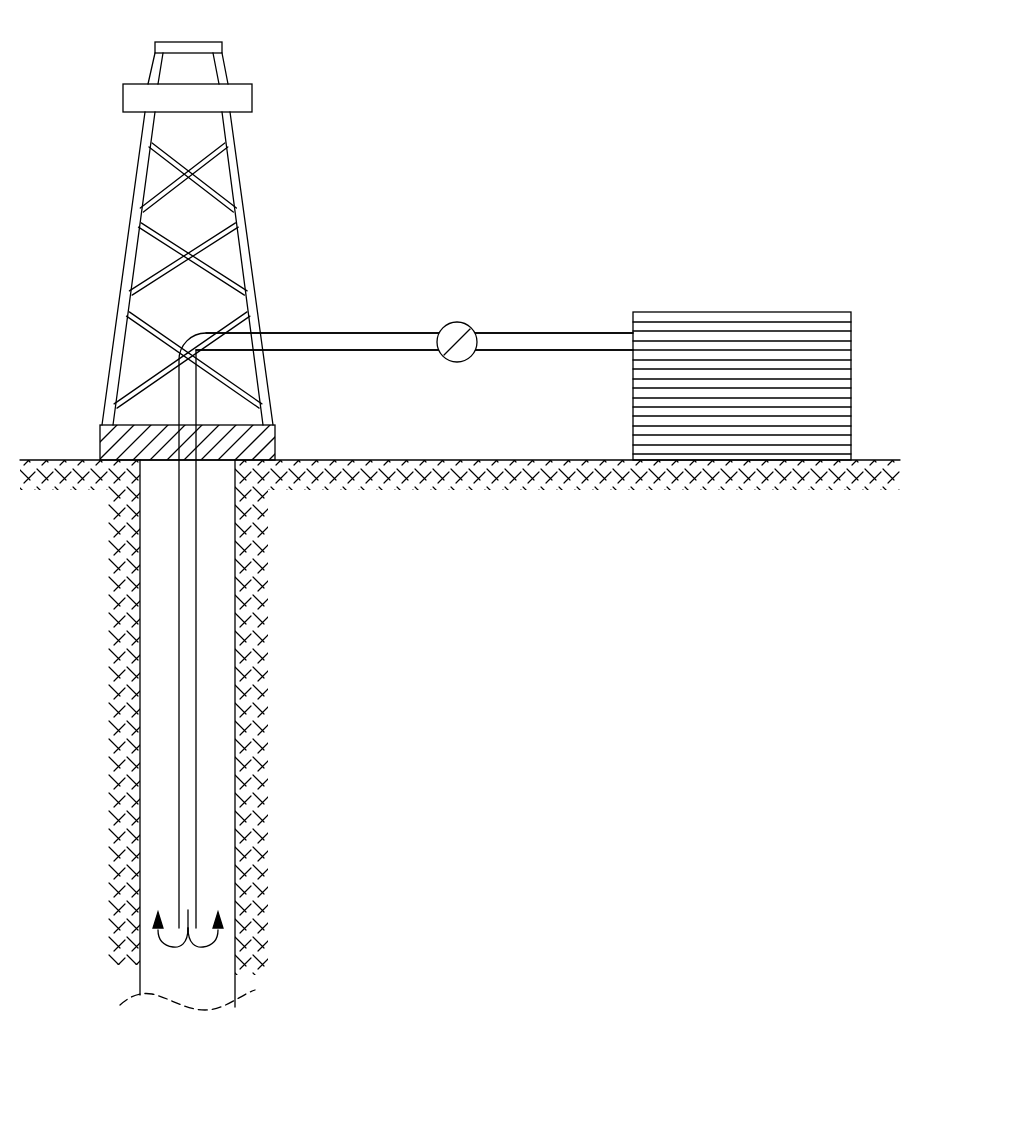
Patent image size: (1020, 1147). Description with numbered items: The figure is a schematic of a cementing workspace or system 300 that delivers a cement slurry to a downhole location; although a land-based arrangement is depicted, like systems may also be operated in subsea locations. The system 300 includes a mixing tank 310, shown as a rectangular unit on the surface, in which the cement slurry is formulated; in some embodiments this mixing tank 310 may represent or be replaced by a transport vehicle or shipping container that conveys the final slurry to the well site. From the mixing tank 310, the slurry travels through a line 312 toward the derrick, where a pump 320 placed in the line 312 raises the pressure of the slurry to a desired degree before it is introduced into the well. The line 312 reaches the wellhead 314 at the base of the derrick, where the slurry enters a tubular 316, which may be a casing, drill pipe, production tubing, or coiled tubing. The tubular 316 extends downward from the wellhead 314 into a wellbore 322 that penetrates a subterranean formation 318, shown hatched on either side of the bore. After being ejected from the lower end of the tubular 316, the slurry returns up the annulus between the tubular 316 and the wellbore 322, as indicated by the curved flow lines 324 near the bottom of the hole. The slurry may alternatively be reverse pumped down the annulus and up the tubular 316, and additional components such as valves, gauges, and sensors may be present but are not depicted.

The cementing workspace or system 300 is at (610, 123).
The mixing tank 310 is at (735, 312).
The line 312 is at (372, 333).
The wellhead 314 is at (100, 444).
The tubular 316 is at (197, 610).
The subterranean formation 318 is at (95, 621).
The pump 320 is at (461, 323).
The wellbore 322 is at (238, 790).
The flow lines 324 is at (155, 940).